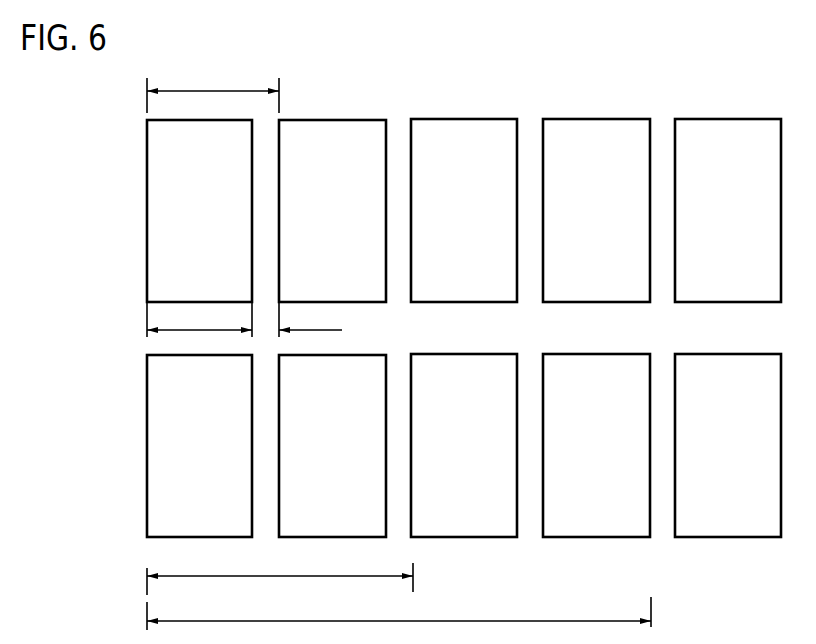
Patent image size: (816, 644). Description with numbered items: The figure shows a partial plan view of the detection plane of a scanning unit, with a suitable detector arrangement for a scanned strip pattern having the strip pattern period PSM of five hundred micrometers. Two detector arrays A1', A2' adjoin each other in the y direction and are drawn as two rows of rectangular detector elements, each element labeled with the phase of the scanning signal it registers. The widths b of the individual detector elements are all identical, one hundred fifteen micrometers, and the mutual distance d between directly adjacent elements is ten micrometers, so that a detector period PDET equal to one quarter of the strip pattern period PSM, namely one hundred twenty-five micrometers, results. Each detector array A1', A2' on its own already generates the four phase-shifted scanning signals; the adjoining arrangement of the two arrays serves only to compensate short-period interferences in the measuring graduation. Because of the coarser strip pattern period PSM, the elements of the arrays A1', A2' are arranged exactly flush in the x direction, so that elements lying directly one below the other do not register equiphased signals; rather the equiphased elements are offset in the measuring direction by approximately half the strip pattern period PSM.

The first detector array A1' is at (413, 210).
The second detector array A2' is at (413, 445).
The detector period PDET is at (213, 87).
The width of detector element b is at (199, 319).
The mutual distance of adjacent detector elements d is at (302, 319).
The strip pattern period PSM is at (399, 612).